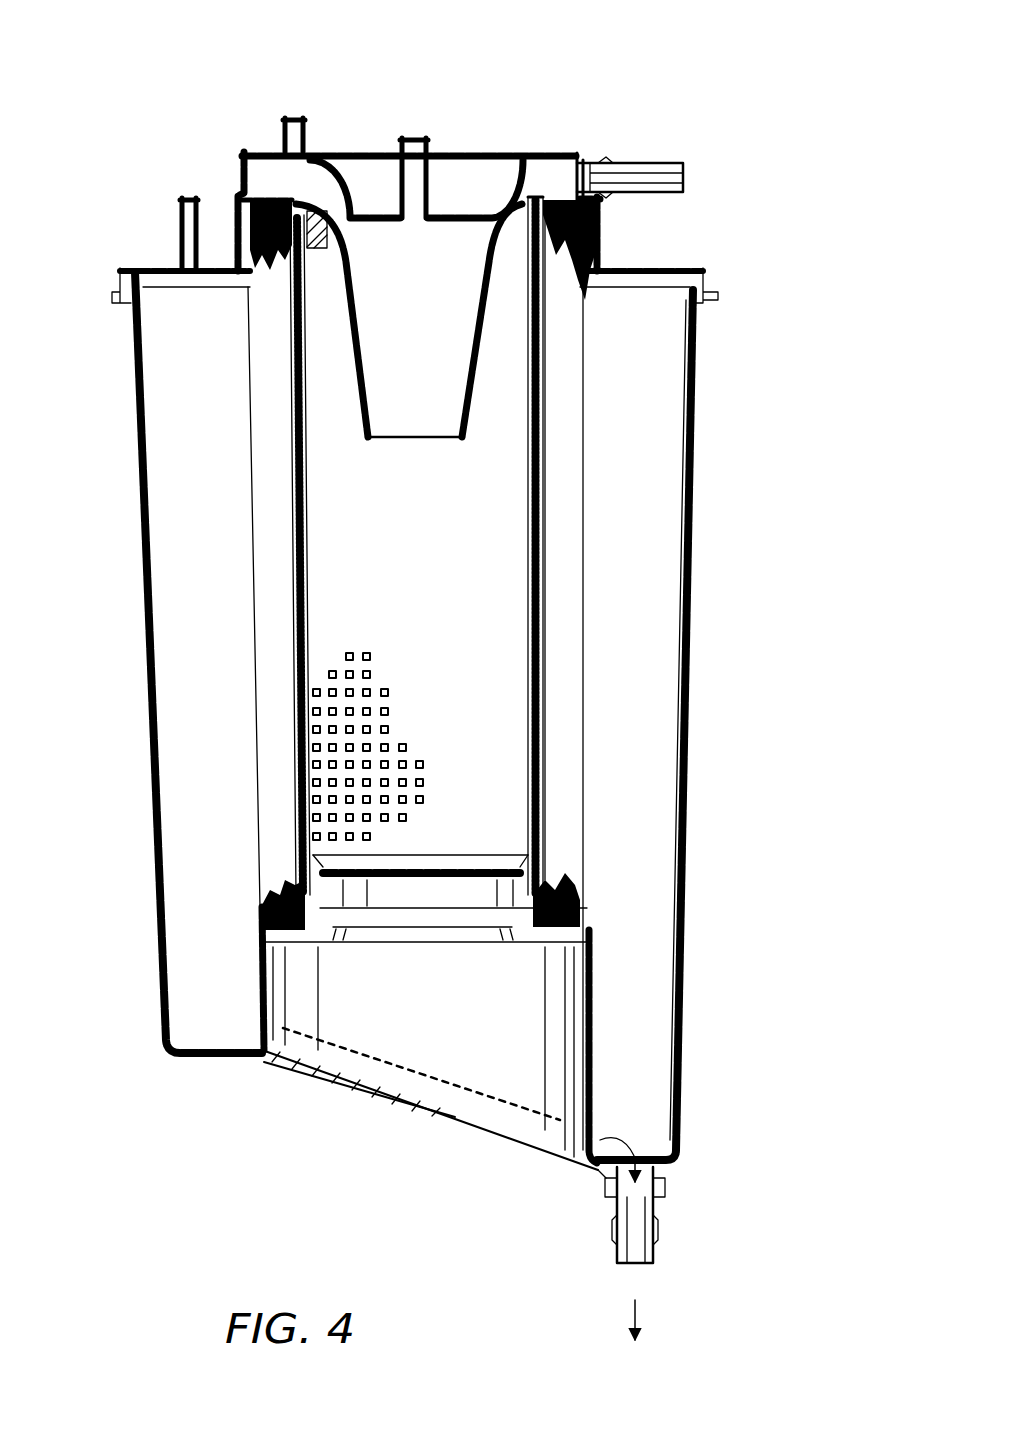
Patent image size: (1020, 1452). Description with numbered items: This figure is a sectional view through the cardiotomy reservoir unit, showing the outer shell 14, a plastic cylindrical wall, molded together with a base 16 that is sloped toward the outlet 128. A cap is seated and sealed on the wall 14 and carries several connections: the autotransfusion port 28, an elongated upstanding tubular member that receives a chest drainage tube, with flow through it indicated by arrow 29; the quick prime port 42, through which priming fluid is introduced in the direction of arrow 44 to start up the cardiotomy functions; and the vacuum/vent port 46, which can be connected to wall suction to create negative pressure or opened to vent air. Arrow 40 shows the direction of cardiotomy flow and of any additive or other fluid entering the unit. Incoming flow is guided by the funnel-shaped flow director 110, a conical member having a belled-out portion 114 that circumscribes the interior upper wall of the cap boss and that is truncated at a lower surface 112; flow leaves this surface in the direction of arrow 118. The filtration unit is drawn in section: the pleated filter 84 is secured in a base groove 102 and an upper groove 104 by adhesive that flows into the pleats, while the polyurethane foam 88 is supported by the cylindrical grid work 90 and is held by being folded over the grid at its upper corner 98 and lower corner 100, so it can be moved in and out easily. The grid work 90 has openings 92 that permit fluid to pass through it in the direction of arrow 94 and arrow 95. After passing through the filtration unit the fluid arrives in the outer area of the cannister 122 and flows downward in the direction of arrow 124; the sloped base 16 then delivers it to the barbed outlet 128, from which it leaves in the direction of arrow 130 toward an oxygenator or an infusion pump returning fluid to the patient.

The outer shell 14 is at (692, 523).
The base 16 is at (252, 1073).
The autotransfusion port 28 is at (433, 163).
The arrow 29 is at (414, 112).
The arrow 40 is at (718, 174).
The quick prime port 42 is at (283, 136).
The arrow 44 is at (293, 92).
The vacuum/vent port 46 is at (178, 214).
The pleated filter 84 is at (597, 284).
The polyurethane foam 88 is at (542, 470).
The grid work 90 is at (545, 648).
The openings 92 is at (385, 692).
The arrow 94 is at (213, 700).
The arrow 95 is at (622, 796).
The corner 98 is at (524, 197).
The corner 100 is at (343, 917).
The base groove 102 is at (556, 928).
The upper groove 104 is at (577, 152).
The flow director 110 is at (357, 324).
The surface 112 is at (462, 437).
The belled-out portion 114 is at (500, 193).
The arrow 118 is at (418, 502).
The outer area of the cannister 122 is at (668, 667).
The arrow 124 is at (260, 1023).
The outlet 128 is at (655, 1200).
The arrow 130 is at (644, 1303).